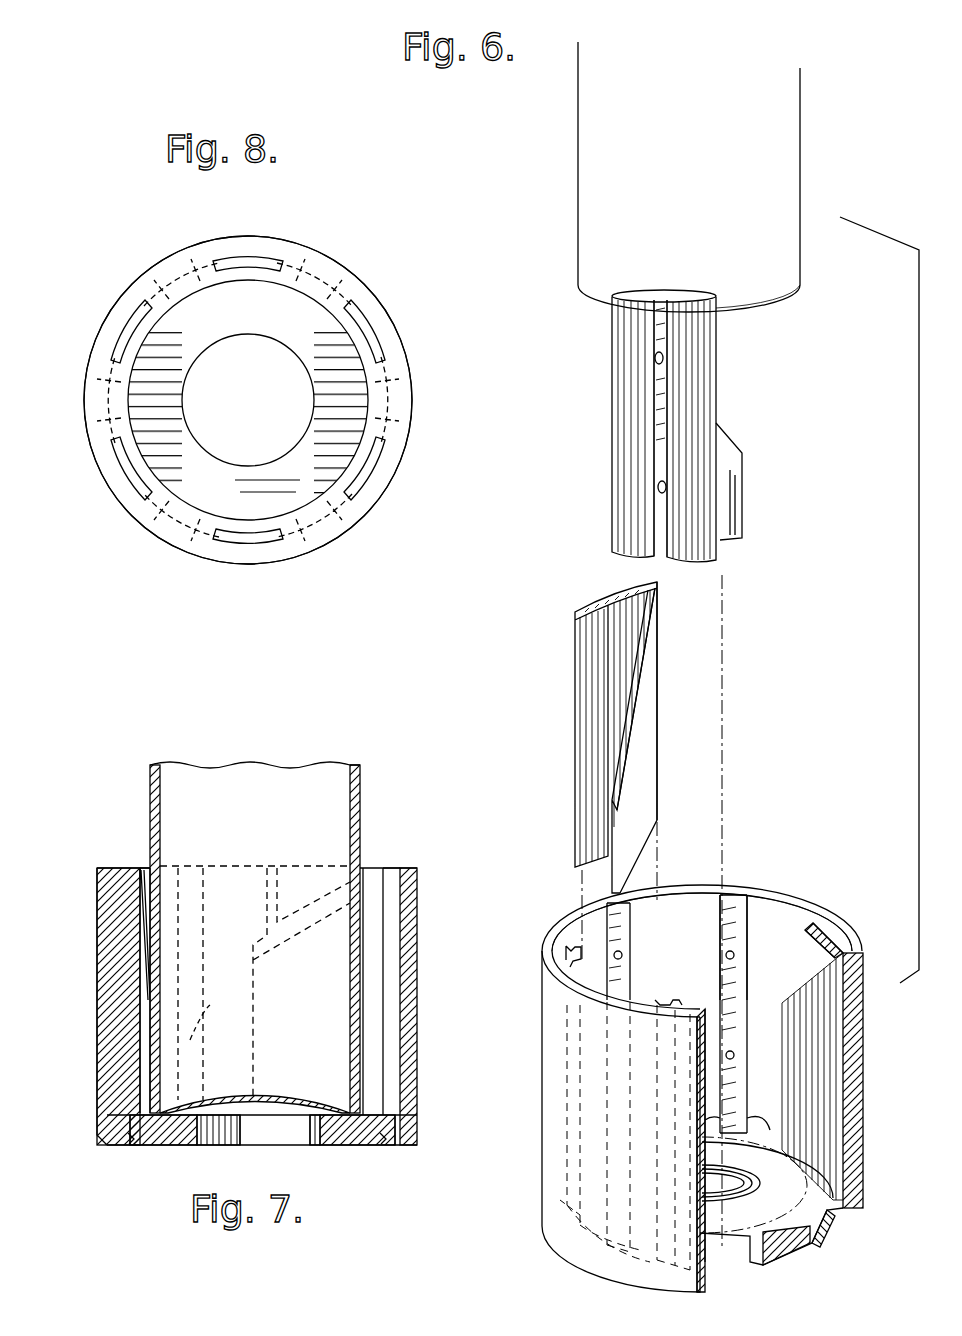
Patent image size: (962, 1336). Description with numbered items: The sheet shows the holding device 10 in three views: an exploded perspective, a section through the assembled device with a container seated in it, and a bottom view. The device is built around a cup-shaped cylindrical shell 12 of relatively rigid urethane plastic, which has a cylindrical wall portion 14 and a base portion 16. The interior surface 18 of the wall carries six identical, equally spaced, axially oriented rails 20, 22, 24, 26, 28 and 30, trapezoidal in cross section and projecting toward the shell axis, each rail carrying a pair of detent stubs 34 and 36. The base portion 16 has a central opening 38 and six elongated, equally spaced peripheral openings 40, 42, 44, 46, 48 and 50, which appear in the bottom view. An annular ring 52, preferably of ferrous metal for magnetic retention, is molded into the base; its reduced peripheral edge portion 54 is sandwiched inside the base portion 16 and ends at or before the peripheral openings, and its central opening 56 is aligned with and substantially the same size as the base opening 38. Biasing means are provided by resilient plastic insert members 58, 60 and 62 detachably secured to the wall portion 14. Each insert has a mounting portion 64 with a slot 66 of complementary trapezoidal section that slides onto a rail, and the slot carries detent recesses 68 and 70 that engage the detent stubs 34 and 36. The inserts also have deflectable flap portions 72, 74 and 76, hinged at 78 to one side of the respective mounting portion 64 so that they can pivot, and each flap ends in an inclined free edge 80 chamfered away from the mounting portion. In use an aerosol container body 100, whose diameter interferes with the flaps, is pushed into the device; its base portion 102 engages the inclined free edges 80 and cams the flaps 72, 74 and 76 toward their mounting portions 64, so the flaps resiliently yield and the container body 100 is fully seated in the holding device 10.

In FIG. 8, the holding device 10 is at (325, 205).
In FIG. 7, the holding device 10 is at (439, 868).
In FIG. 6, the holding device 10 is at (811, 828).
In FIG. 8, the shell 12 is at (248, 400).
In FIG. 7, the shell 12 is at (422, 992).
In FIG. 6, the shell 12 is at (756, 874).
In FIG. 7, the cylindrical wall portion 14 is at (97, 915).
In FIG. 6, the cylindrical wall portion 14 is at (863, 1045).
In FIG. 8, the base portion 16 is at (395, 368).
In FIG. 7, the base portion 16 is at (120, 1148).
In FIG. 6, the base portion 16 is at (797, 1198).
In FIG. 7, the interior surface 18 is at (405, 908).
In FIG. 6, the interior surface 18 is at (805, 898).
In FIG. 8, the rail 20 is at (318, 522).
In FIG. 6, the rail 20 is at (730, 890).
In FIG. 8, the rail 22 is at (395, 400).
In FIG. 6, the rail 22 is at (826, 935).
In FIG. 8, the rail 24 is at (325, 268).
In FIG. 8, the rail 26 is at (170, 275).
In FIG. 6, the rail 26 is at (668, 1003).
In FIG. 8, the rail 28 is at (100, 405).
In FIG. 7, the rail 28 is at (120, 858).
In FIG. 6, the rail 28 is at (560, 953).
In FIG. 8, the rail 30 is at (182, 530).
In FIG. 7, the rail 30 is at (188, 868).
In FIG. 6, the rail 30 is at (620, 930).
In FIG. 7, the detent stub 34 is at (185, 928).
In FIG. 6, the detent stub 34 is at (735, 956).
In FIG. 7, the detent stub 36 is at (72, 1068).
In FIG. 6, the detent stub 36 is at (735, 1057).
In FIG. 7, the central opening 38 is at (276, 1124).
In FIG. 8, the peripheral opening 40 is at (235, 540).
In FIG. 6, the peripheral opening 40 is at (620, 1132).
In FIG. 8, the peripheral opening 42 is at (372, 465).
In FIG. 6, the peripheral opening 42 is at (762, 1140).
In FIG. 8, the peripheral opening 44 is at (370, 335).
In FIG. 7, the peripheral opening 44 is at (400, 1148).
In FIG. 6, the peripheral opening 44 is at (830, 1225).
In FIG. 8, the peripheral opening 46 is at (300, 250).
In FIG. 6, the peripheral opening 46 is at (745, 1268).
In FIG. 8, the peripheral opening 48 is at (125, 322).
In FIG. 6, the peripheral opening 48 is at (615, 1250).
In FIG. 8, the peripheral opening 50 is at (135, 497).
In FIG. 6, the peripheral opening 50 is at (580, 1148).
In FIG. 8, the annular ring 52 is at (272, 500).
In FIG. 7, the annular ring 52 is at (165, 1147).
In FIG. 6, the annular ring 52 is at (738, 1180).
In FIG. 7, the reduced peripheral edge portion 54 is at (133, 1150).
In FIG. 8, the central opening 56 is at (268, 430).
In FIG. 7, the central opening 56 is at (242, 1138).
In FIG. 7, the insert member 58 is at (132, 856).
In FIG. 6, the insert member 58 is at (590, 605).
In FIG. 7, the insert member 60 is at (395, 857).
In FIG. 6, the insert member 60 is at (829, 903).
In FIG. 6, the insert member 62 is at (727, 385).
In FIG. 6, the mounting portion 64 is at (700, 337).
In FIG. 6, the slot 66 is at (664, 284).
In FIG. 6, the detent recess 68 is at (655, 357).
In FIG. 6, the detent recess 70 is at (658, 488).
In FIG. 6, the flap portion 72 is at (653, 810).
In FIG. 6, the flap portion 74 is at (820, 1080).
In FIG. 6, the flap portion 76 is at (730, 440).
In FIG. 6, the hinge 78 is at (660, 672).
In FIG. 6, the inclined free edge 80 is at (642, 655).
In FIG. 7, the aerosol container body 100 is at (367, 790).
In FIG. 6, the aerosol container body 100 is at (808, 150).
In FIG. 7, the base portion 102 is at (345, 1110).
In FIG. 6, the base portion 102 is at (782, 298).